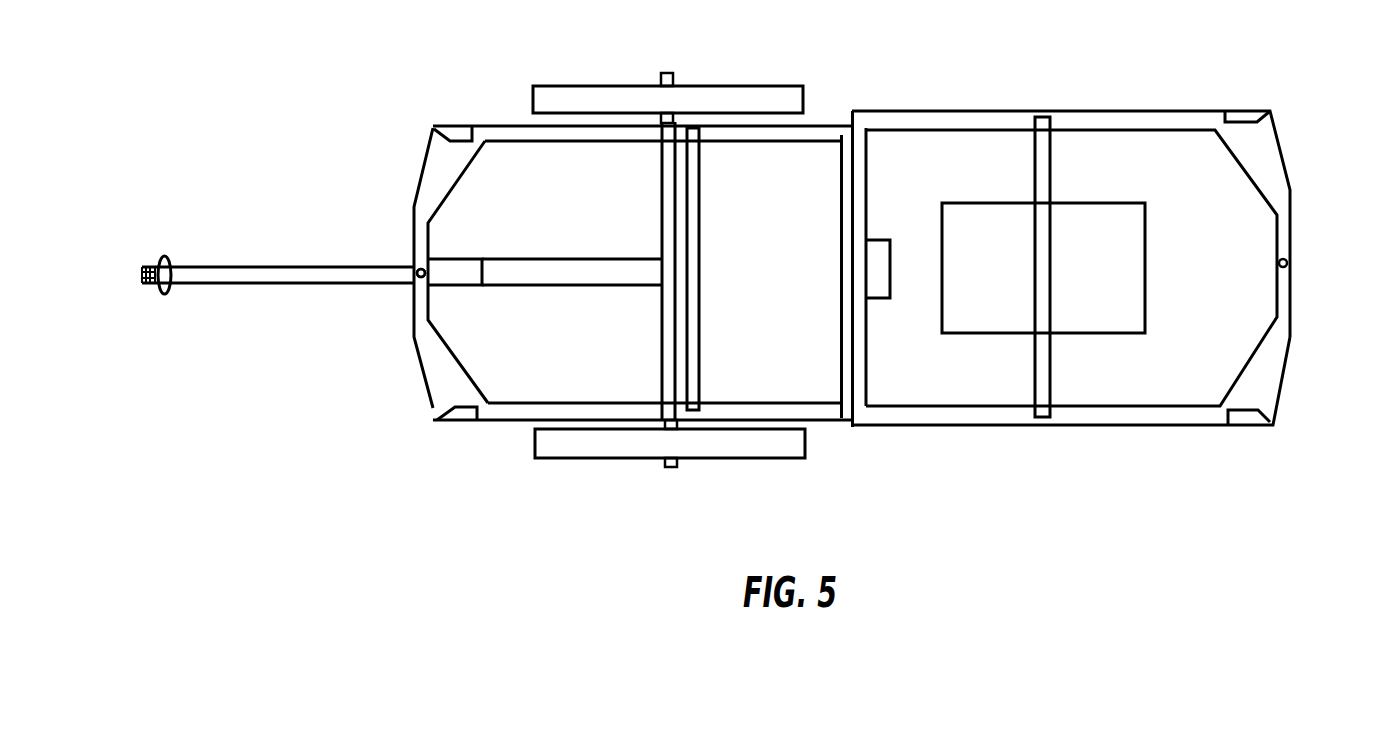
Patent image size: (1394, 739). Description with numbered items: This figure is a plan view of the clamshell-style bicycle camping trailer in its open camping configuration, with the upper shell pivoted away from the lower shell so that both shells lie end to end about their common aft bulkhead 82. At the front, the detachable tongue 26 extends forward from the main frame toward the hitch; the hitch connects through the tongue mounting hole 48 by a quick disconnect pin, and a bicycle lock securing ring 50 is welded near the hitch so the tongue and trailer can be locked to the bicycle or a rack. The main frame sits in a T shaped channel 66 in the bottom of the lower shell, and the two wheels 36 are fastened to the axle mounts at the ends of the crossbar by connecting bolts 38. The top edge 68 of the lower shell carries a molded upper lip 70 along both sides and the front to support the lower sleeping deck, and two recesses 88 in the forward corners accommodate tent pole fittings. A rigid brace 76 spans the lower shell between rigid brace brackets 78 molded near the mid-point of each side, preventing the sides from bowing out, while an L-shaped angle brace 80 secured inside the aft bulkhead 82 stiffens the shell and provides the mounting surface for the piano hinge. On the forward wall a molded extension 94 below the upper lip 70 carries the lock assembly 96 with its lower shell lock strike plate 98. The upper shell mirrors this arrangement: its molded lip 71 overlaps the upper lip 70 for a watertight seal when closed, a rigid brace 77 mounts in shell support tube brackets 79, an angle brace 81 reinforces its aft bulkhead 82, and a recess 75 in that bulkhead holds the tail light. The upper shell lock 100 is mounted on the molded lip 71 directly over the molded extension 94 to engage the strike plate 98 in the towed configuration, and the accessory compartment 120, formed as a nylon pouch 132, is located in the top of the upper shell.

The detachable tongue 26 is at (267, 275).
The wheels 36 is at (593, 460).
The connecting bolts 38 is at (662, 72).
The tongue mounting hole 48 is at (142, 268).
The bicycle lock securing ring 50 is at (167, 295).
The T shaped channel 66 is at (587, 270).
The top edge 68 is at (527, 130).
The upper lip 70 is at (430, 363).
The molded lip 71 is at (1152, 413).
The recess 75 is at (880, 250).
The rigid brace 76 is at (693, 397).
The rigid brace 77 is at (1055, 415).
The rigid brace brackets 78 is at (705, 132).
The shell support tube brackets 79 is at (1078, 116).
The angle brace 80 is at (846, 148).
The angle brace 81 is at (863, 127).
The aft bulkhead 82 is at (848, 380).
The recesses 88 is at (458, 133).
The molded extension 94 is at (450, 267).
The lock assembly 96 is at (398, 292).
The lower shell lock strike plate 98 is at (420, 257).
The upper shell lock 100 is at (1290, 257).
The accessory compartment 120 is at (1145, 263).
The pouch 132 is at (1070, 202).